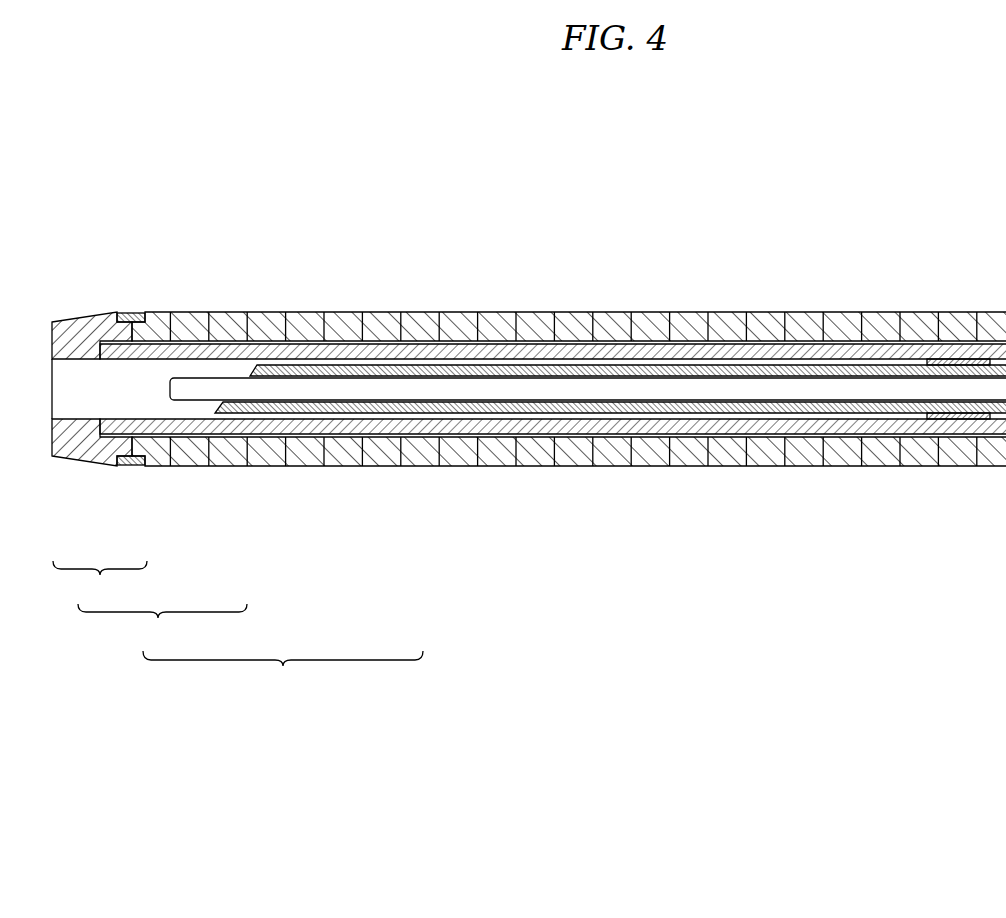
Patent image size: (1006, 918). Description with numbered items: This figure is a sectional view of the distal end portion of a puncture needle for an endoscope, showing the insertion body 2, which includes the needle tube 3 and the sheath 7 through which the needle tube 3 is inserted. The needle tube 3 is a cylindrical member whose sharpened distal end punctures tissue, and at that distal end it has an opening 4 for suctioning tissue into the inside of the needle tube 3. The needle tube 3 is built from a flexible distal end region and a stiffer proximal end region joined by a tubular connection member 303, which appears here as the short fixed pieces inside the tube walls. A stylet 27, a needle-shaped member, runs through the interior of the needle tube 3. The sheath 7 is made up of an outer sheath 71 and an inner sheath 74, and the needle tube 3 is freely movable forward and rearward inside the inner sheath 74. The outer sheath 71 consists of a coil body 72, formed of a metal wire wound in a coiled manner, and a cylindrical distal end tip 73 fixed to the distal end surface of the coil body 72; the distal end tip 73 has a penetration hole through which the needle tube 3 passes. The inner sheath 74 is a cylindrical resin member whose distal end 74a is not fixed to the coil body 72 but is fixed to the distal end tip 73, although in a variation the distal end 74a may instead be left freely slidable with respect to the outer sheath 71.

The insertion body 2 is at (283, 674).
The needle tube 3 is at (407, 409).
The opening 4 is at (252, 376).
The sheath 7 is at (162, 628).
The stylet 27 is at (877, 388).
The outer sheath 71 is at (100, 584).
The coil body 72 is at (192, 458).
The distal end tip 73 is at (82, 452).
The inner sheath 74 is at (272, 430).
The distal end of the inner sheath 74a is at (107, 348).
The tubular connection member 303 is at (958, 419).